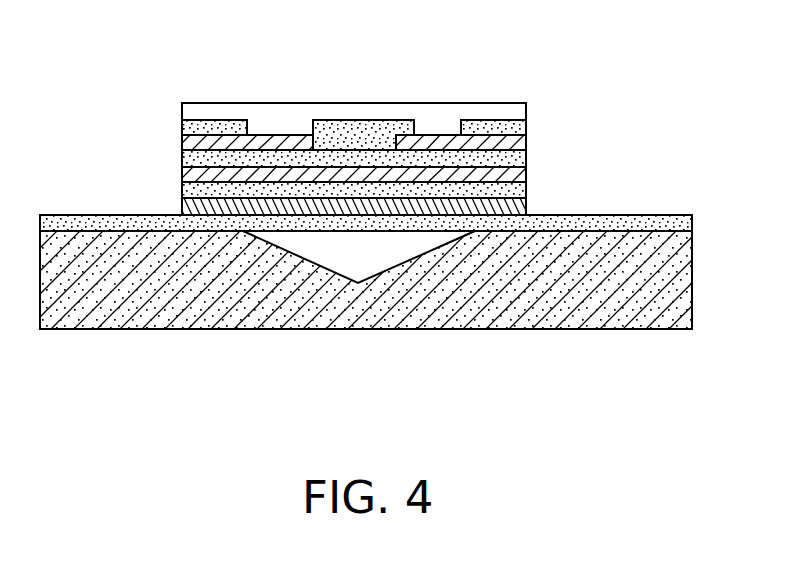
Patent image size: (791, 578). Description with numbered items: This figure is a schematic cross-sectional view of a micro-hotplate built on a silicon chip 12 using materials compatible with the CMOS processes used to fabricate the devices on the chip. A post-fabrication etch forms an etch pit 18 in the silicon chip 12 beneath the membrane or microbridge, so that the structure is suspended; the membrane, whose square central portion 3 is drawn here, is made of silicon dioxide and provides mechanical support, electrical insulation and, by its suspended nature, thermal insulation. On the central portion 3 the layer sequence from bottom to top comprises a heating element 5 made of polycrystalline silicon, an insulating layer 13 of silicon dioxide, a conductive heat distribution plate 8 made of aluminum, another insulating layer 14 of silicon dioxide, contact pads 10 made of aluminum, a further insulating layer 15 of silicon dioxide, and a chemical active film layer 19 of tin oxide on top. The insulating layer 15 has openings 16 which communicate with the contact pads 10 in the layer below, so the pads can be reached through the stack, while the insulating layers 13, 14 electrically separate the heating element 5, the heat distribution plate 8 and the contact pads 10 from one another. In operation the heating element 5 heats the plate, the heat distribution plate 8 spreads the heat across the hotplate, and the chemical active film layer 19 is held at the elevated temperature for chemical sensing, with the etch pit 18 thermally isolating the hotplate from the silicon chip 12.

The central portion 3 is at (625, 223).
The heating element 5 is at (188, 208).
The conductive heat distribution plate 8 is at (192, 179).
The contact pads 10 is at (190, 147).
The silicon chip 12 is at (203, 322).
The insulating layer 13 is at (527, 188).
The insulating layer 14 is at (527, 158).
The insulating layer 15 is at (183, 128).
The openings 16 is at (275, 112).
The etch pit 18 is at (427, 253).
The chemical active film layer 19 is at (502, 108).